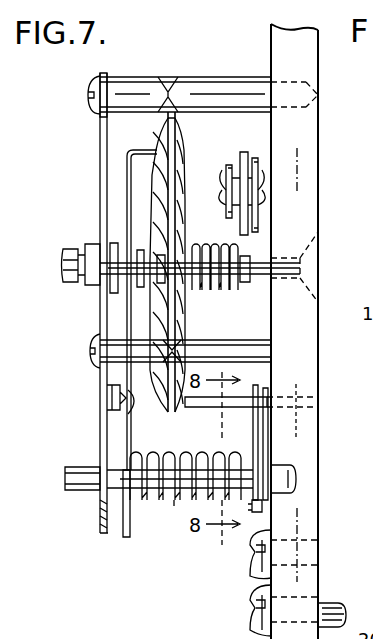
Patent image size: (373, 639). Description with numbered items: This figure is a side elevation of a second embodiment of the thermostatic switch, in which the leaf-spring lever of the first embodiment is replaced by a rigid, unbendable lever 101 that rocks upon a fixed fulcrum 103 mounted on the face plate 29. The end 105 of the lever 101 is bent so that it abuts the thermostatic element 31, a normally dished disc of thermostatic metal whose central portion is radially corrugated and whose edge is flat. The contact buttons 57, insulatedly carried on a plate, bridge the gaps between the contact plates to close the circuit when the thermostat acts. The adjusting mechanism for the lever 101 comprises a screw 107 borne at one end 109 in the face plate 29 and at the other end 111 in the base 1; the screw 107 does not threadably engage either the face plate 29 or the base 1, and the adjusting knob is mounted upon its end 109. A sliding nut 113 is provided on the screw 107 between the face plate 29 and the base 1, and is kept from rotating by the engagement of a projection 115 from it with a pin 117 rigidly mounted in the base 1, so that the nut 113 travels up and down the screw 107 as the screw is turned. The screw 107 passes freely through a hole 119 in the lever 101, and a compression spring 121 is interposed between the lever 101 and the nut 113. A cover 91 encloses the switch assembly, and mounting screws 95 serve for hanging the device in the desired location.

The base-board 1 is at (306, 455).
The end of lever 105 is at (143, 152).
The face plate 29 is at (104, 446).
The rigid lever 101 is at (128, 206).
The thermostatic element 31 is at (193, 171).
The contact buttons 57 is at (258, 173).
The cover 91 is at (370, 264).
The fixed fulcrum 103 is at (118, 396).
The pin 117 is at (252, 394).
The projection 115 is at (258, 430).
The end of screw 111 is at (292, 478).
The screw 107 is at (192, 462).
The end of screw 109 is at (95, 490).
The hole 119 is at (130, 505).
The compression spring 121 is at (178, 503).
The sliding nut 113 is at (253, 516).
The mounting screws 95 is at (326, 612).